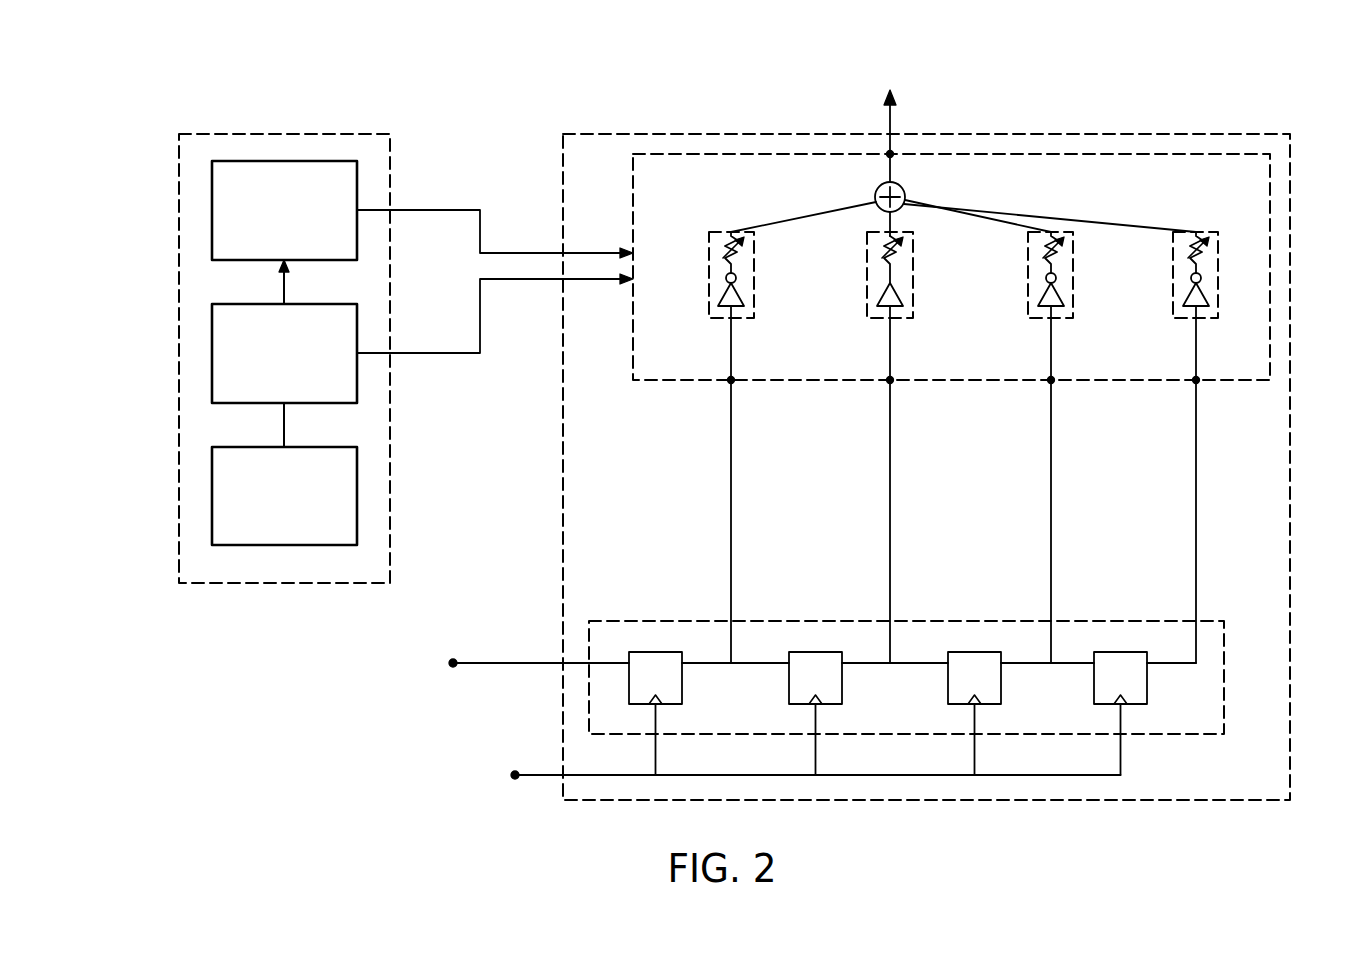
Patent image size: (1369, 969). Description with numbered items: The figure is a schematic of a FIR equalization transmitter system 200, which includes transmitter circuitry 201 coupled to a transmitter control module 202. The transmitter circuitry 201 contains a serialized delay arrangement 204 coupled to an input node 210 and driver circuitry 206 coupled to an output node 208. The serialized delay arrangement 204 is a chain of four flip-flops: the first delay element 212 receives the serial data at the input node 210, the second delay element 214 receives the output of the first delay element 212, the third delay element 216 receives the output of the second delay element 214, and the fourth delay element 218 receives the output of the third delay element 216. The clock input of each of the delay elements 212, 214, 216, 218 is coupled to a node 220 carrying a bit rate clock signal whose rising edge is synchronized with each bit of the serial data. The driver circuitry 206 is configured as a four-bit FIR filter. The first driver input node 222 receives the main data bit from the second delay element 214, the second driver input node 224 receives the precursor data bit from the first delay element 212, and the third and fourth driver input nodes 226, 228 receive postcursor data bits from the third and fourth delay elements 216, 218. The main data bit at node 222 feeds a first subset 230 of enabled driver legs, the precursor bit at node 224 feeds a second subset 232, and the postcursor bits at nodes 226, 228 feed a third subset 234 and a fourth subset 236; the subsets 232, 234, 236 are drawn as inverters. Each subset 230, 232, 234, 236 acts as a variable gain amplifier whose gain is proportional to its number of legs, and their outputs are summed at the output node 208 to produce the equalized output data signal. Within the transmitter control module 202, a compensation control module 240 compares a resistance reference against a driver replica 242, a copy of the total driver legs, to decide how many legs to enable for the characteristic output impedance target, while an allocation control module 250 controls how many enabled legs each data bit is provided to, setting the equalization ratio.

The FIR equalization transmitter system 200 is at (1186, 92).
The transmitter circuitry 201 is at (1290, 472).
The transmitter control module 202 is at (258, 134).
The serialized delay arrangement 204 is at (1224, 620).
The driver circuitry 206 is at (1264, 253).
The output node 208 is at (890, 154).
The input node 210 is at (453, 663).
The first delay element 212 is at (655, 652).
The second delay element 214 is at (815, 652).
The third delay element 216 is at (974, 652).
The fourth delay element 218 is at (1119, 652).
The clock node 220 is at (515, 775).
The first driver input node 222 is at (890, 380).
The second driver input node 224 is at (731, 380).
The third driver input node 226 is at (1051, 380).
The fourth driver input node 228 is at (1196, 380).
The first subset of enabled driver legs 230 is at (867, 280).
The second subset of enabled driver legs 232 is at (710, 280).
The third subset of enabled driver legs 234 is at (1028, 282).
The fourth subset of enabled driver legs 236 is at (1173, 282).
The compensation control module 240 is at (212, 361).
The driver replica 242 is at (212, 501).
The allocation control module 250 is at (212, 213).